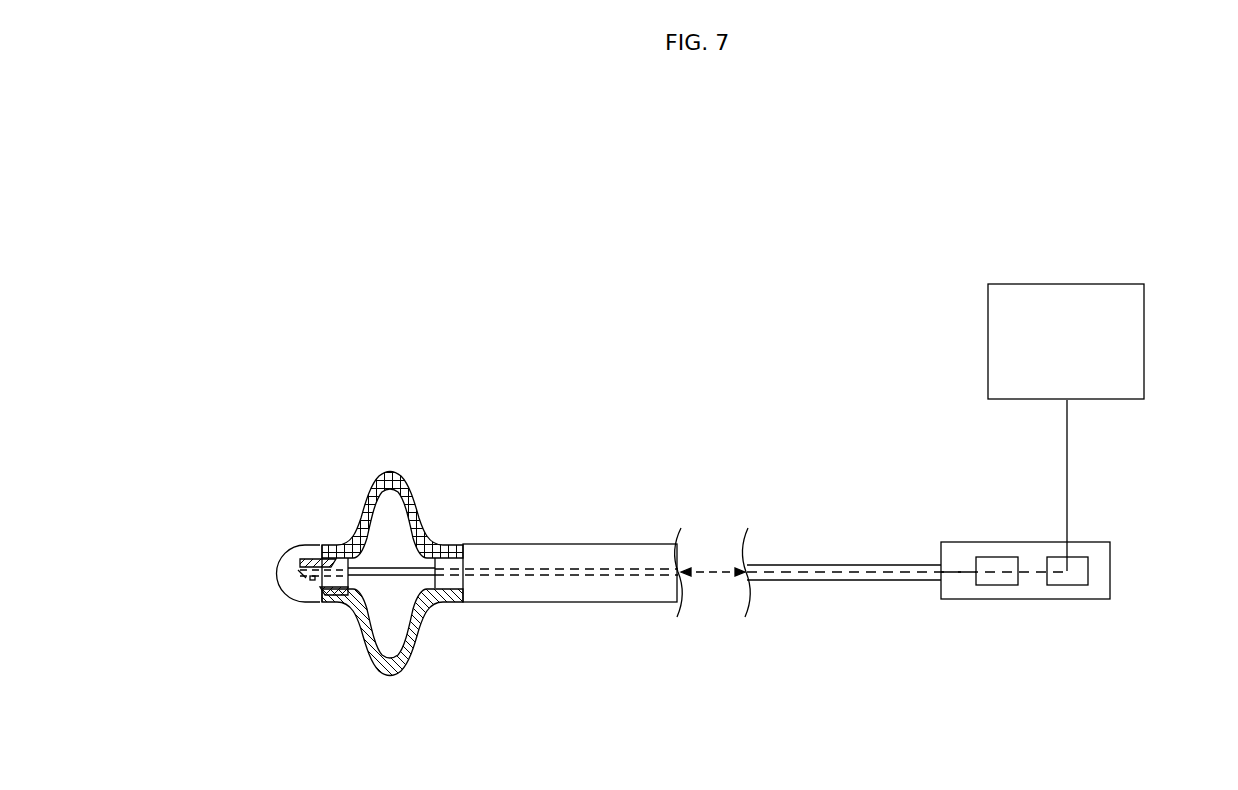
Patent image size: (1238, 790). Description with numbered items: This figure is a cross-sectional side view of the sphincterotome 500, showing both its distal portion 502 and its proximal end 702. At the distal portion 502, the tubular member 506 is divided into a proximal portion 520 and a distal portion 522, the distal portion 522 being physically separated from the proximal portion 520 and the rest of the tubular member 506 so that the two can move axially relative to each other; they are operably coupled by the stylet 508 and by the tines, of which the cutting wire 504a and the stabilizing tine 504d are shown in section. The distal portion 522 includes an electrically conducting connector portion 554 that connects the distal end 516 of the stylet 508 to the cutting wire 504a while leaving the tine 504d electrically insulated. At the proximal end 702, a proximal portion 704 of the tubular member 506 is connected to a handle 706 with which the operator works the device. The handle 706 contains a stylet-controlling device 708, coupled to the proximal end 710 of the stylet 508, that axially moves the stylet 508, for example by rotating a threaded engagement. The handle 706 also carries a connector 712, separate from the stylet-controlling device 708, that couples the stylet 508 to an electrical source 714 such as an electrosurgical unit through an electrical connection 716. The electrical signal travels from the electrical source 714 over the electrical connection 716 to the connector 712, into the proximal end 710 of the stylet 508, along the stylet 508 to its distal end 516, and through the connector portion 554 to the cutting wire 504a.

The sphincterotome 500 is at (418, 243).
The distal portion 502 is at (522, 462).
The cutting wire 504a is at (413, 510).
The tine 504d is at (420, 630).
The tubular member 506 is at (627, 543).
The stylet 508 is at (578, 570).
The distal end of the stylet 516 is at (312, 577).
The proximal portion 520 is at (498, 555).
The distal portion 522 is at (288, 580).
The connector portion 554 is at (300, 560).
The proximal end 702 is at (1153, 497).
The proximal portion 704 is at (875, 565).
The handle 706 is at (1092, 599).
The stylet-controlling device 708 is at (995, 585).
The proximal end of the stylet 710 is at (963, 571).
The connector 712 is at (1090, 568).
The electrical source 714 is at (988, 318).
The electrical connection 716 is at (1067, 458).